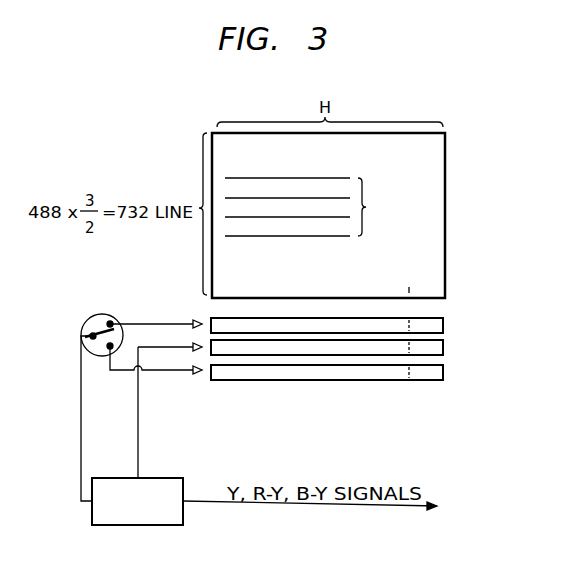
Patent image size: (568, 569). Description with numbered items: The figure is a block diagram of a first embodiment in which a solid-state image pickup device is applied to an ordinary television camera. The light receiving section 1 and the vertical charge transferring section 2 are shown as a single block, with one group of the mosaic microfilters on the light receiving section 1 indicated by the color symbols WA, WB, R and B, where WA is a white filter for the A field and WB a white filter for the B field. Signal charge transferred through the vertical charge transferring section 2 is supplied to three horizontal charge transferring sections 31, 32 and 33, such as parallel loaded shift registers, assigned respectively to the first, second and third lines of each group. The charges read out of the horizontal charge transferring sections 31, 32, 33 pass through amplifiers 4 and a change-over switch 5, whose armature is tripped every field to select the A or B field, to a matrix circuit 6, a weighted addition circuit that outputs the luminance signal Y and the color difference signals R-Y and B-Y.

The light receiving section 1 is at (360, 215).
The vertical charge transferring section 2 is at (435, 262).
The horizontal charge transferring section 31 is at (437, 331).
The horizontal charge transferring section 32 is at (437, 352).
The horizontal charge transferring section 33 is at (435, 375).
The amplifiers 4 is at (193, 370).
The change-over switch 5 is at (97, 317).
The matrix circuit 6 is at (167, 477).